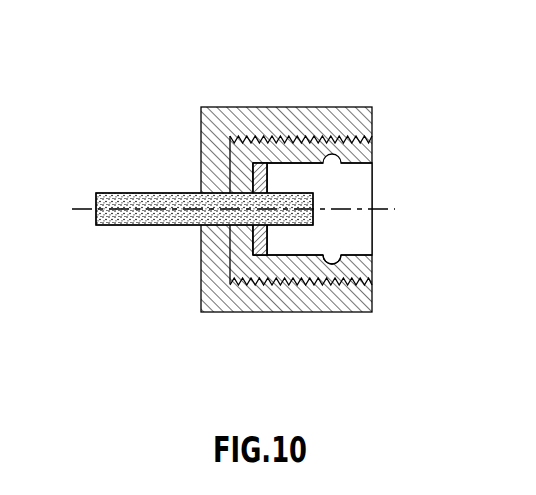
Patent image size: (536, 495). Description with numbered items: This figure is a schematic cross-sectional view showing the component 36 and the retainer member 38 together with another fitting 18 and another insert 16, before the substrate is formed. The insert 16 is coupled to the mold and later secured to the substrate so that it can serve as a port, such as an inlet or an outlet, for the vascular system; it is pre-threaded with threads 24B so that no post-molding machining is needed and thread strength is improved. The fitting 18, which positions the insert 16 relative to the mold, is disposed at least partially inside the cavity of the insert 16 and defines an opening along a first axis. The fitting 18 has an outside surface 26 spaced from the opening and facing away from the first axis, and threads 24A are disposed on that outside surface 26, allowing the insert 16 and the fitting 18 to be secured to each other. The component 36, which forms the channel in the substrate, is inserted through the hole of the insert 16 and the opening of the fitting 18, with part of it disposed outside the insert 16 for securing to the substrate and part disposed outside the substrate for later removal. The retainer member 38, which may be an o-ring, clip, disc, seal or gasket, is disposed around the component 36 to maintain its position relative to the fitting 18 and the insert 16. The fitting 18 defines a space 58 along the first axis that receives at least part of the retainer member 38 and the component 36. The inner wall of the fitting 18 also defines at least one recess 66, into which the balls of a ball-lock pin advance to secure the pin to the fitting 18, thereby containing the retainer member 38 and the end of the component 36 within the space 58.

The insert 16 is at (232, 136).
The fitting 18 is at (253, 262).
The threads 24A is at (358, 281).
The threads 24B is at (353, 140).
The outside surface 26 is at (297, 138).
The component 36 is at (101, 226).
The retainer member 38 is at (272, 190).
The space 58 is at (351, 189).
The recess 66 is at (331, 263).